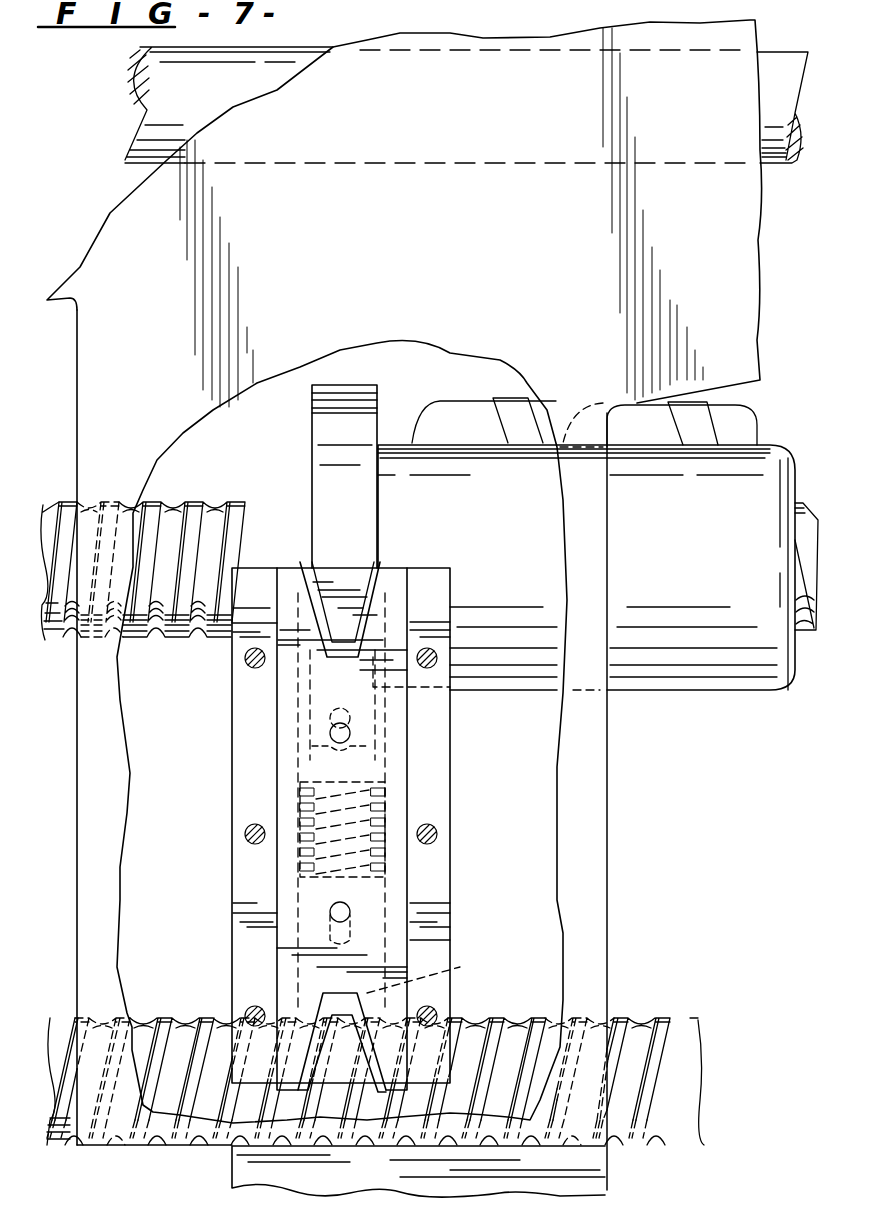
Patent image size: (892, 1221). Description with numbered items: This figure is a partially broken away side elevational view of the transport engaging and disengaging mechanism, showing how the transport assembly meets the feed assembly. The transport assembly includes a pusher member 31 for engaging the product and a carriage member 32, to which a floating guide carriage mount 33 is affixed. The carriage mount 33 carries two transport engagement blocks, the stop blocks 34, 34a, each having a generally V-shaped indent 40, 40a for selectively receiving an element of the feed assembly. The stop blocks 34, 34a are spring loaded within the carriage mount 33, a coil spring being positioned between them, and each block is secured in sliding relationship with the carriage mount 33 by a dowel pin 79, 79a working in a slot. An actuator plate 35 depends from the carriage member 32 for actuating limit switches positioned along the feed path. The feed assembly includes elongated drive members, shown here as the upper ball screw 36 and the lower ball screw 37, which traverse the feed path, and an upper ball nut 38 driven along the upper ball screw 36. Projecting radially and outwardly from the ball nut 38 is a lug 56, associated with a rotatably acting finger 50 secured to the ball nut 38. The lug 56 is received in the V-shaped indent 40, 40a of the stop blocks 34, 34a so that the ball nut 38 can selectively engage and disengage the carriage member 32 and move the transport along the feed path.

The pusher member 31 is at (697, 204).
The carriage member 32 is at (117, 789).
The floating guide carriage mount 33 is at (453, 812).
The stop block 34 is at (413, 690).
The stop block 34a is at (447, 965).
The actuator plate 35 is at (330, 1189).
The upper ball screw 36 is at (47, 627).
The lower ball screw 37 is at (695, 1055).
The upper ball nut 38 is at (508, 522).
The indent 40 is at (318, 627).
The indent 40a is at (337, 1020).
The rotatably acting finger 50 is at (332, 432).
The lug 56 is at (333, 590).
The dowel pin 79 is at (343, 734).
The dowel pin 79a is at (352, 912).